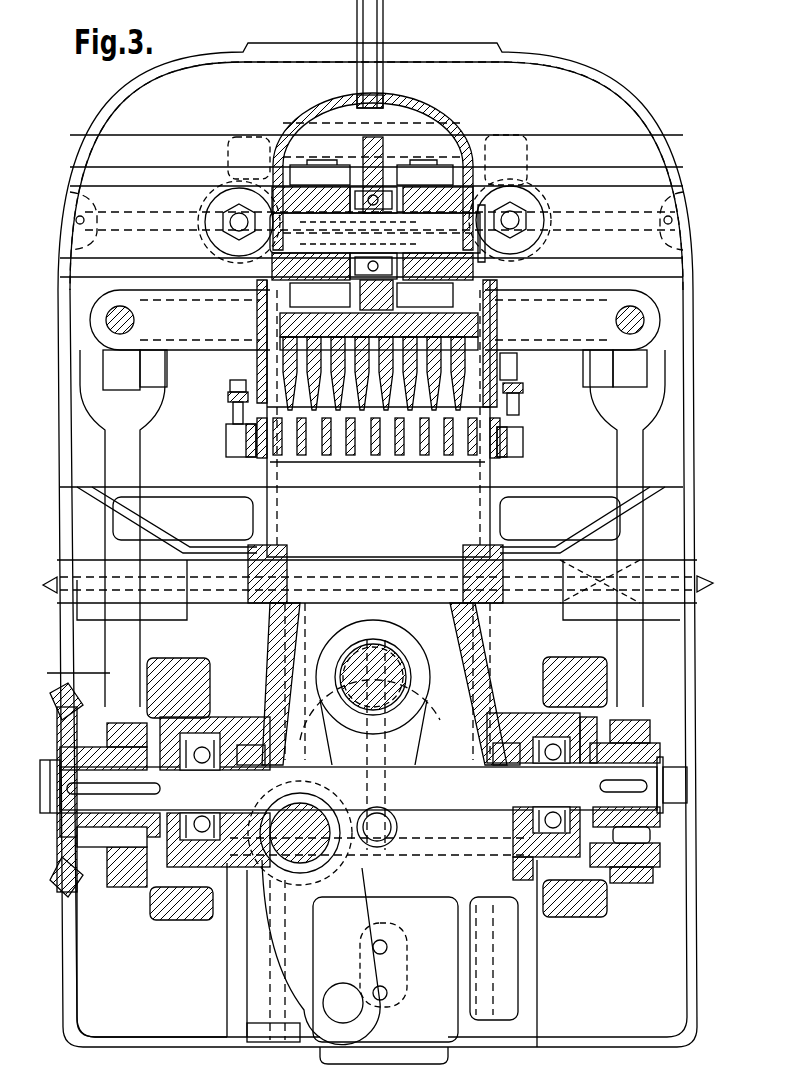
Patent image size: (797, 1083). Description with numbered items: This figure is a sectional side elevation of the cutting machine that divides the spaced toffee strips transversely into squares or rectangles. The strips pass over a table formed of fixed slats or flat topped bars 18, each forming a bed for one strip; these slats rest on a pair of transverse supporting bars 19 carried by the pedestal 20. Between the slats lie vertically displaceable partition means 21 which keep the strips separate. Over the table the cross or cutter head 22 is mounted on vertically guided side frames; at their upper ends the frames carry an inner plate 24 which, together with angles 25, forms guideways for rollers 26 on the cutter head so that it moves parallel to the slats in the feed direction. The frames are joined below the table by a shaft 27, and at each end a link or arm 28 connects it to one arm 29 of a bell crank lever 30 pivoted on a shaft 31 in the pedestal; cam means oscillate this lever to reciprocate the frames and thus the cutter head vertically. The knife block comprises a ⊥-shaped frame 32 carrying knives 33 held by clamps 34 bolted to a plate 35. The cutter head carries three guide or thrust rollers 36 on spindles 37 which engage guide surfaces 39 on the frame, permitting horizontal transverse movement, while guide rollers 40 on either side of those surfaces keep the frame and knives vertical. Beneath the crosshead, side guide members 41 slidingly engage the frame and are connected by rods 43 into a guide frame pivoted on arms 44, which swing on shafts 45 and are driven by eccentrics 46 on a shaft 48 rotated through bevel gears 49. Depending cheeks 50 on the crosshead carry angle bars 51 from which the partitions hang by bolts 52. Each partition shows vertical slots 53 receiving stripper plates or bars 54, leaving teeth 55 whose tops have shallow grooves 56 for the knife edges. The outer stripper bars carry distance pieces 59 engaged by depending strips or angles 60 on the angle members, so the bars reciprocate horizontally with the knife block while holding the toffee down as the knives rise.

The table slats or flat topped bars 18 is at (93, 493).
The transverse supporting bars 19 is at (257, 572).
The pedestal 20 is at (477, 687).
The partition means 21 is at (477, 440).
The cross or cutter head 22 is at (400, 147).
The inner plate 24 is at (580, 263).
The angles 25 is at (533, 167).
The rollers 26 is at (207, 197).
The shaft 27 is at (340, 680).
The link or arm 28 is at (423, 737).
The arm of bell crank lever 29 is at (373, 865).
The bell crank lever 30 is at (277, 937).
The shaft 31 is at (283, 877).
The ⊥-shaped frame 32 is at (277, 270).
The knives 33 is at (383, 463).
The clamps 34 is at (277, 357).
The plate 35 is at (607, 290).
The guide or thrust rollers 36 is at (427, 165).
The spindles 37 is at (313, 217).
The guide surfaces 39 is at (357, 157).
The guide rollers 40 is at (325, 167).
The side guide members 41 is at (187, 340).
The rods 43 is at (103, 323).
The arms 44 is at (120, 443).
The shafts 45 is at (538, 605).
The eccentrics 46 is at (120, 857).
The shaft 48 is at (450, 775).
The bevel gears 49 is at (80, 877).
The depending cheeks 50 is at (253, 370).
The angle bars 51 is at (230, 413).
The bolts 52 is at (233, 430).
The vertical slots 53 is at (300, 457).
The stripper plates or bars 54 is at (330, 457).
The upstanding portions or teeth 55 is at (433, 453).
The shallow grooves 56 is at (437, 447).
The distance pieces 59 is at (267, 433).
The depending strips or angles 60 is at (233, 392).